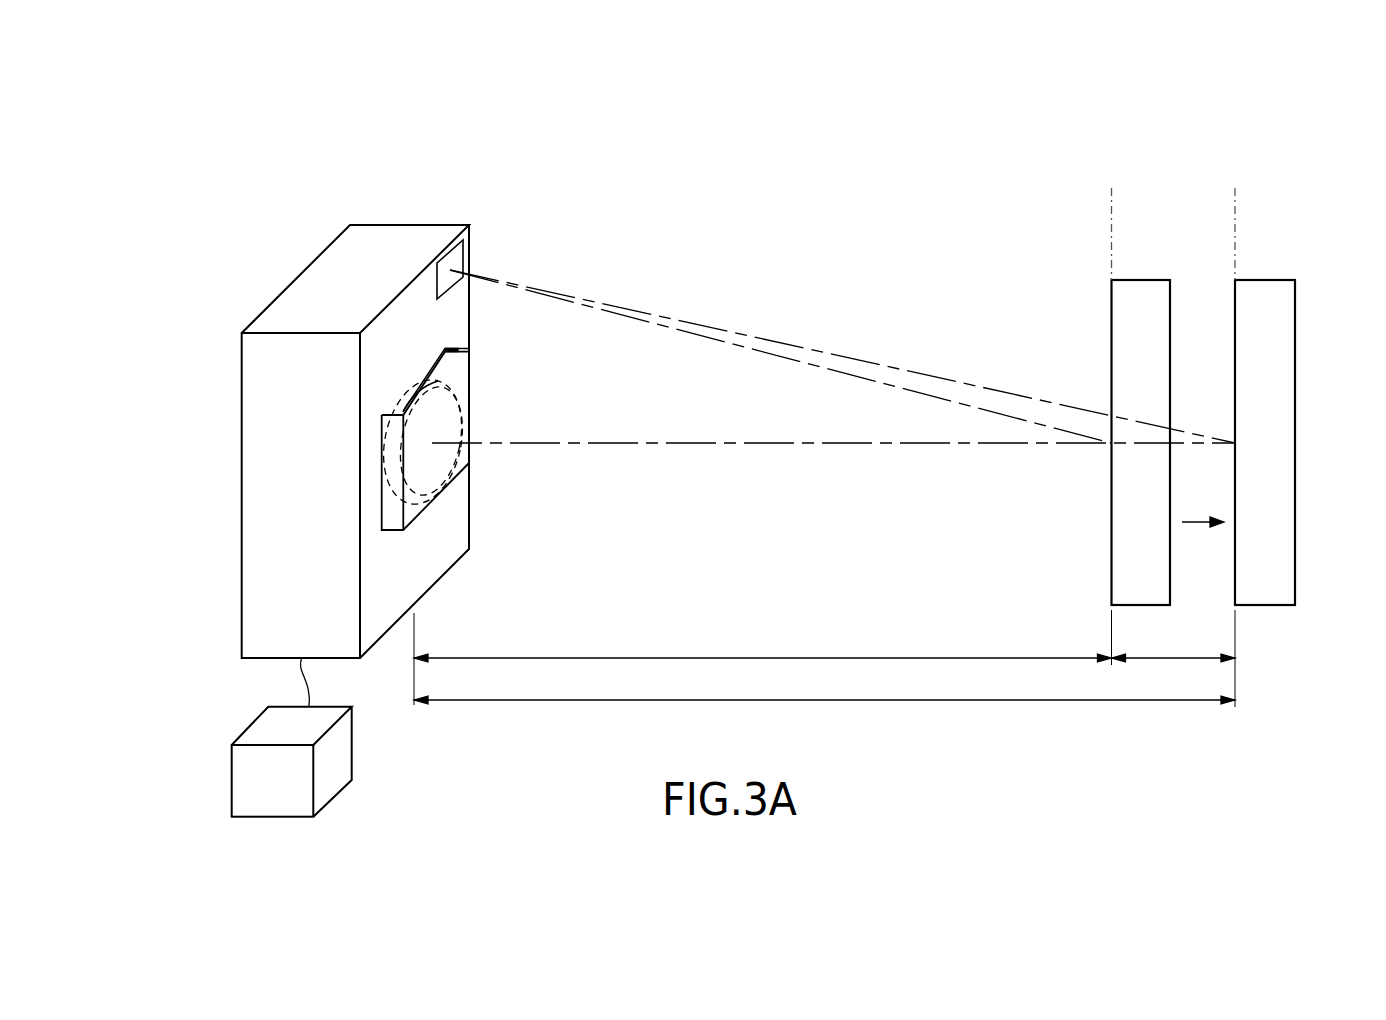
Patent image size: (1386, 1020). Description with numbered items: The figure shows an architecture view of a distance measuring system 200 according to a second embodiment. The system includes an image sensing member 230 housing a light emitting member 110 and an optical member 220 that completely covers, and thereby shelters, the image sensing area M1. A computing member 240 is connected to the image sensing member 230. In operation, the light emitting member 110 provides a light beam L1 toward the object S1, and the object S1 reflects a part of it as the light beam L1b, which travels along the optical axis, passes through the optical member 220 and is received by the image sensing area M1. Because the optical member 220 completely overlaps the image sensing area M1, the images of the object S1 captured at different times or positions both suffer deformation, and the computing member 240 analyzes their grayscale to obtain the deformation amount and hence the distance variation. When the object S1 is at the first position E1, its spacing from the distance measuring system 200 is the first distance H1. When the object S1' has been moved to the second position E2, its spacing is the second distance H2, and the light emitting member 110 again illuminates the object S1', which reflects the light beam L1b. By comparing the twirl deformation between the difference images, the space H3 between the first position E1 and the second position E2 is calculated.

The distance measuring system 200 is at (280, 134).
The image sensing member 230 is at (305, 293).
The light emitting member 110 is at (460, 257).
The optical member 220 is at (460, 465).
The image sensing area M1 is at (463, 388).
The computing member 240 is at (342, 752).
The light beam L1 is at (842, 356).
The light beam L1b is at (703, 442).
The object S1 is at (1150, 410).
The object S1' is at (1277, 410).
The first position E1 is at (1113, 217).
The second position E2 is at (1237, 217).
The first distance H1 is at (763, 642).
The second distance H2 is at (824, 684).
The space H3 is at (1174, 642).